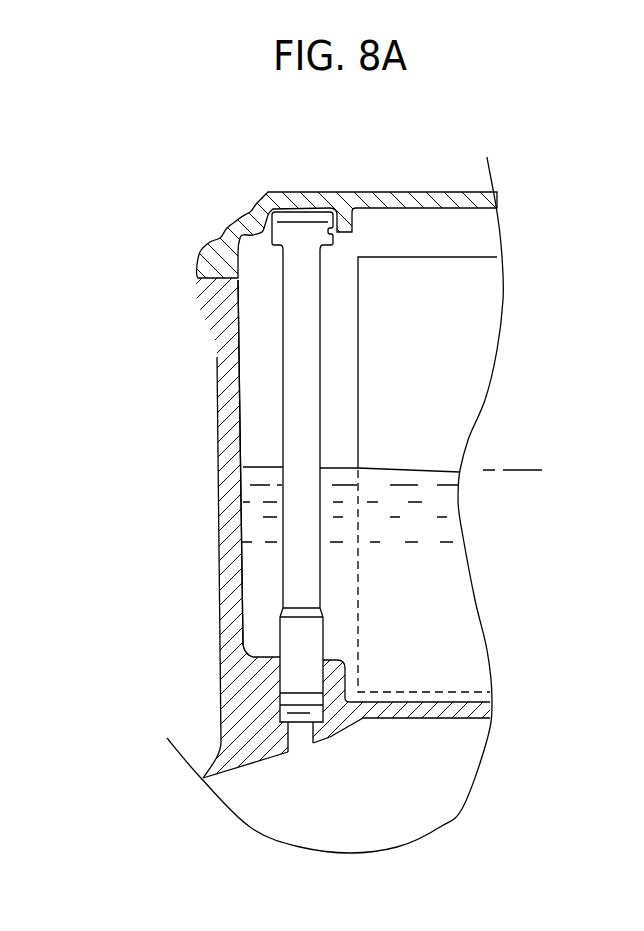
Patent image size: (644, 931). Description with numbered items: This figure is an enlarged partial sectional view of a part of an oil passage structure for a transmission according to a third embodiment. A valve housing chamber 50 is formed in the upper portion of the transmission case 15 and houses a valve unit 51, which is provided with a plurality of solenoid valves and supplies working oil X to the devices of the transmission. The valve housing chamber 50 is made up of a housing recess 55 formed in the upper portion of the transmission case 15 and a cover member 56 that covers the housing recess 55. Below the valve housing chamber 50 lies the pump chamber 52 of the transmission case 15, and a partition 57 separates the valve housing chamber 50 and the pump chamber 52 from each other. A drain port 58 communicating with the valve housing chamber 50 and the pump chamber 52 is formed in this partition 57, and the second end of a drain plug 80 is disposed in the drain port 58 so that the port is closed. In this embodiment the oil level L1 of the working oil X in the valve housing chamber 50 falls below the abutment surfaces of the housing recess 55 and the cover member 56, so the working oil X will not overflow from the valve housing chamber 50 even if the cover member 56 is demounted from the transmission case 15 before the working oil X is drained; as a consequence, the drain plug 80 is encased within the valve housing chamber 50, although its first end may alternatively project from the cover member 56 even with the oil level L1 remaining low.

The transmission case 15 is at (205, 464).
The valve housing chamber 50 is at (467, 235).
The valve unit 51 is at (460, 320).
The pump chamber 52 is at (442, 763).
The housing recess 55 is at (240, 388).
The cover member 56 is at (425, 200).
The partition 57 is at (382, 710).
The drain port 58 is at (300, 738).
The drain plug 80 is at (297, 322).
The working oil X is at (338, 467).
The oil level L1 is at (528, 474).